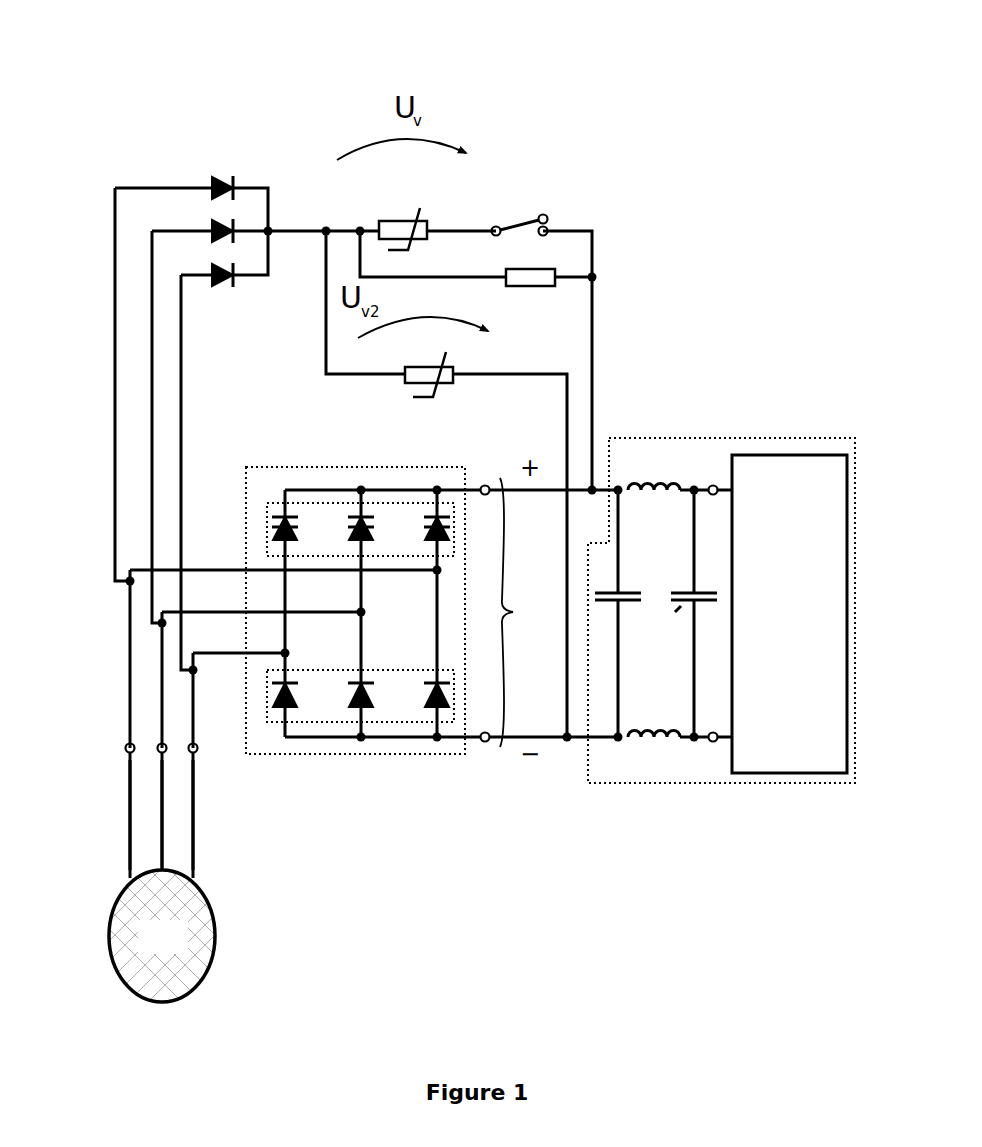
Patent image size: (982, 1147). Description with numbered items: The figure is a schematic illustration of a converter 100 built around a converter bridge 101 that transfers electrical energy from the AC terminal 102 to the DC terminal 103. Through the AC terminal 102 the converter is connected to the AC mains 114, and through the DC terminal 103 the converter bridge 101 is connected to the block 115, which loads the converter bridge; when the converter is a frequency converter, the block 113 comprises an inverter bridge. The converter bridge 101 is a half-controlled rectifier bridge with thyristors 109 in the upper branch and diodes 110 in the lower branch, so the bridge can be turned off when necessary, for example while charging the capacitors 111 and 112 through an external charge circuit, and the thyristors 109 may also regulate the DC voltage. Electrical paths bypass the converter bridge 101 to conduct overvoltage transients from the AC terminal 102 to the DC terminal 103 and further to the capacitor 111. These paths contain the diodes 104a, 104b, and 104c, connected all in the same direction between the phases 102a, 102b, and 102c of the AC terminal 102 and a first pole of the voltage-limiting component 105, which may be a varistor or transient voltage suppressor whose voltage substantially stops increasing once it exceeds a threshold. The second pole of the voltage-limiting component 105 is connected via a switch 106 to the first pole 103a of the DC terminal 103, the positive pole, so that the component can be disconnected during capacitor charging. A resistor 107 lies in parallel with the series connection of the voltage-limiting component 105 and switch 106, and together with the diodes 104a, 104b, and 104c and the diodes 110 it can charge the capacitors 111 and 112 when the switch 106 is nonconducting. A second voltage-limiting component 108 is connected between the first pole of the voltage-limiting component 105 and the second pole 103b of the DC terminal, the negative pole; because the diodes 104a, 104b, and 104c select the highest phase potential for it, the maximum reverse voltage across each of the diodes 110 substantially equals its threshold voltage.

The converter 100 is at (266, 86).
The converter bridge 101 is at (362, 466).
The AC terminal 102 is at (200, 760).
The phase of the AC terminal 102a is at (130, 828).
The phase of the AC terminal 102b is at (162, 838).
The phase of the AC terminal 102c is at (193, 815).
The DC terminal 103 is at (526, 612).
The first pole of the DC terminal 103a is at (485, 486).
The second pole of the DC terminal 103b is at (485, 745).
The diode 104a is at (210, 185).
The diode 104b is at (210, 229).
The diode 104c is at (207, 283).
The voltage-limiting component 105 is at (397, 220).
The switch 106 is at (516, 214).
The resistor 107 is at (543, 286).
The second voltage-limiting component 108 is at (423, 367).
The thyristors 109 is at (272, 500).
The diodes 110 is at (275, 722).
The capacitor 111 is at (630, 590).
The capacitor 112 is at (678, 605).
The block 113 is at (789, 614).
The AC mains 114 is at (203, 983).
The block 115 is at (695, 437).